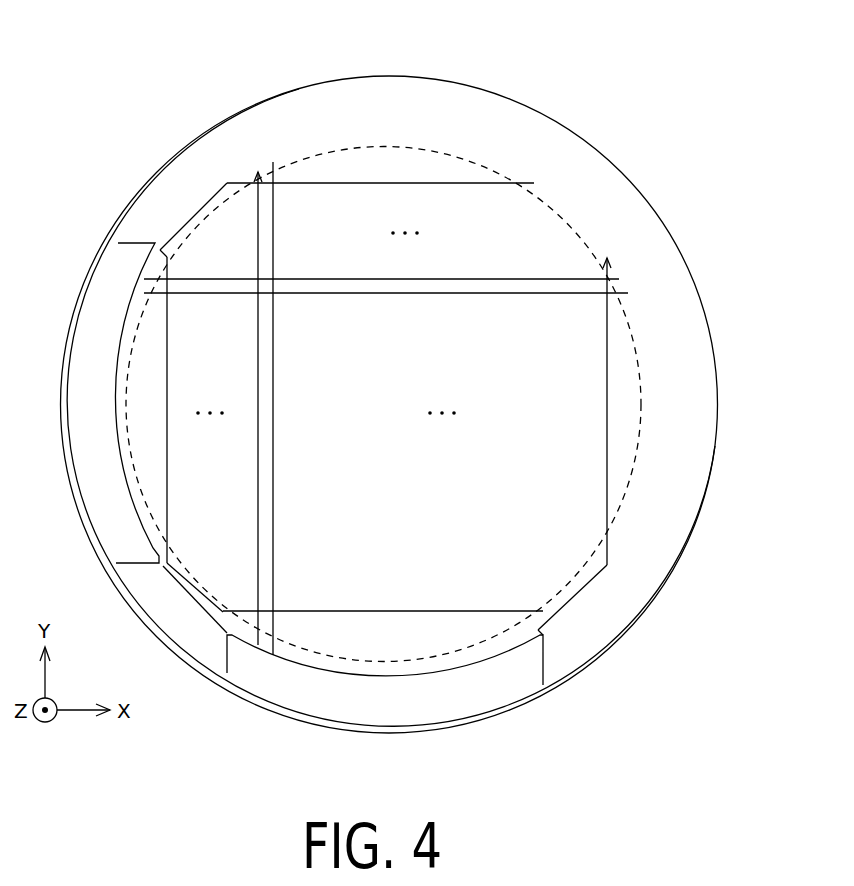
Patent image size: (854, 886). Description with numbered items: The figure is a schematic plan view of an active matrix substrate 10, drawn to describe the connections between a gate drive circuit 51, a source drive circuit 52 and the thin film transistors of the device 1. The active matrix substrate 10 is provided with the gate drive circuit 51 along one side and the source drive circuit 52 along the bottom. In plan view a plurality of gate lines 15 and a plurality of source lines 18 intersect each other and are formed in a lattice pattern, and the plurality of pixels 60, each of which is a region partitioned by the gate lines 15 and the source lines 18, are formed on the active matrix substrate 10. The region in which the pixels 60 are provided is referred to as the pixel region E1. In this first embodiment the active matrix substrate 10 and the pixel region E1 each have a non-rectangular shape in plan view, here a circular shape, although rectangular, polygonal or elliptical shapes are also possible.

The electro-optical device 1 is at (607, 93).
The active matrix substrate 10 is at (420, 73).
The gate lines 15 is at (486, 183).
The source lines 18 is at (257, 203).
The gate drive circuit 51 is at (117, 272).
The source drive circuit 52 is at (267, 670).
The pixels 60 is at (263, 279).
The pixel region E1 is at (312, 152).